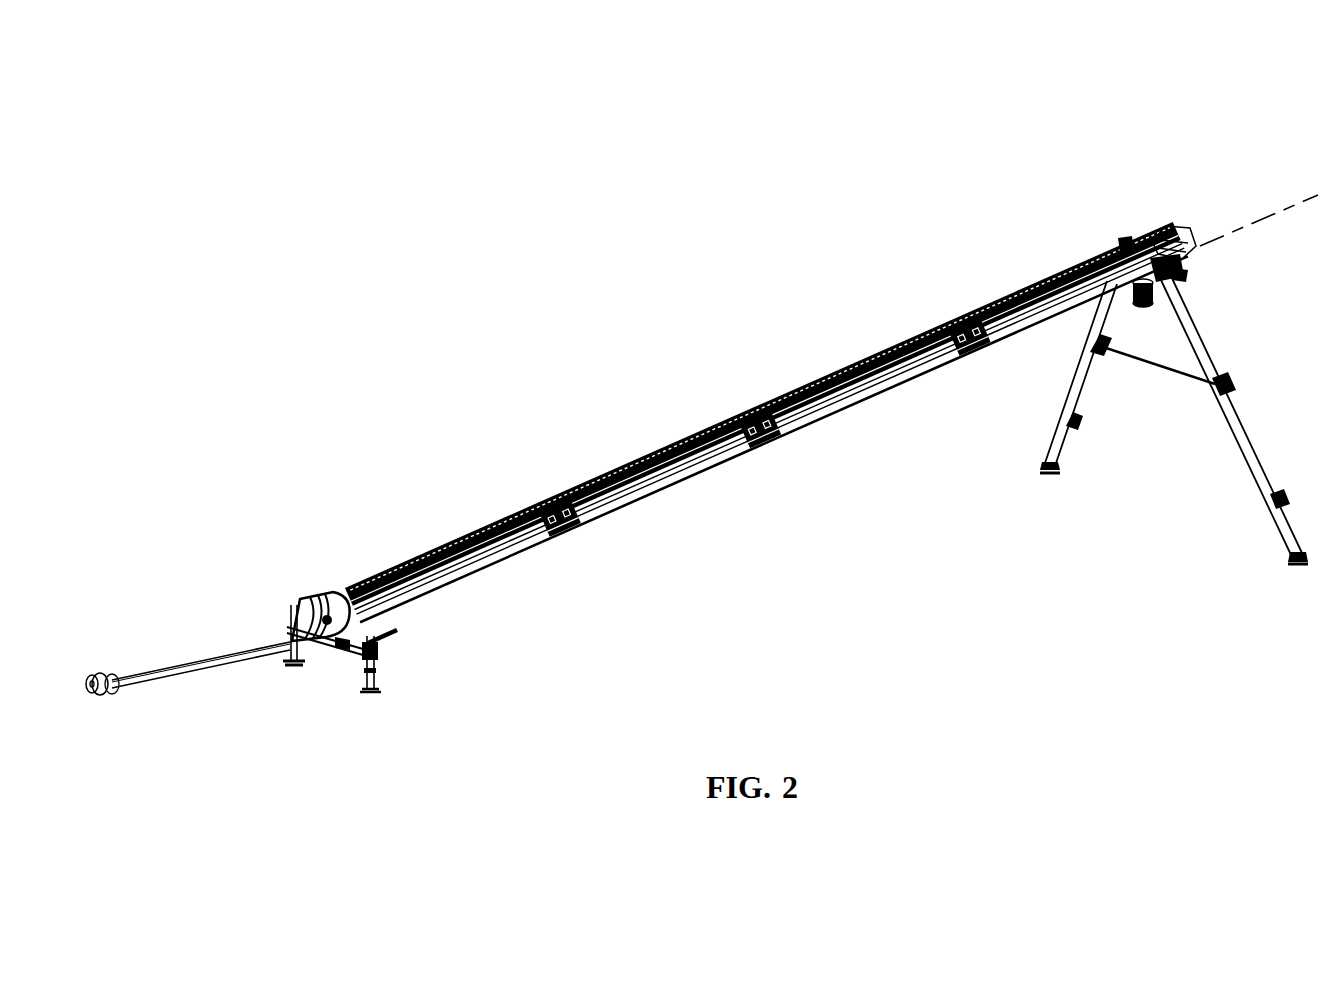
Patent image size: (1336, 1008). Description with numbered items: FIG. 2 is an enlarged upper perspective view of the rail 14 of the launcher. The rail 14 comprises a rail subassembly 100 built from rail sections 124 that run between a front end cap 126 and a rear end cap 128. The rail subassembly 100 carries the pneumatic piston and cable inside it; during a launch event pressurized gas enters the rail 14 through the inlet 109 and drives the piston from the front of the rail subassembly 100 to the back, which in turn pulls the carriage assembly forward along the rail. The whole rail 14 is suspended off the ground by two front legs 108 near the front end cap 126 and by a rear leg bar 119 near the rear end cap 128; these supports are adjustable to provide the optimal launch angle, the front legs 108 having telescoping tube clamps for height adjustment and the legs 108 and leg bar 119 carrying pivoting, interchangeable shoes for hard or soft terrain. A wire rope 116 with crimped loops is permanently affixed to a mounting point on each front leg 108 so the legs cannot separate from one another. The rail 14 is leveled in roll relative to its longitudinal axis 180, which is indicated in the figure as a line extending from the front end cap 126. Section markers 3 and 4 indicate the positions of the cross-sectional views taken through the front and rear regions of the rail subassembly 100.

The rail 14 is at (510, 357).
The rail subassembly 100 is at (666, 394).
The rail sections 124 is at (978, 347).
The front end cap 126 is at (1204, 212).
The longitudinal axis 180 is at (1257, 220).
The inlet 109 is at (1152, 306).
The front legs 108 is at (1070, 408).
The wire rope 116 is at (1194, 386).
The rear end cap 128 is at (268, 604).
The rear leg bar 119 is at (380, 660).
The section line 3- 3 is at (1165, 345).
The section line 4- 4 is at (325, 712).